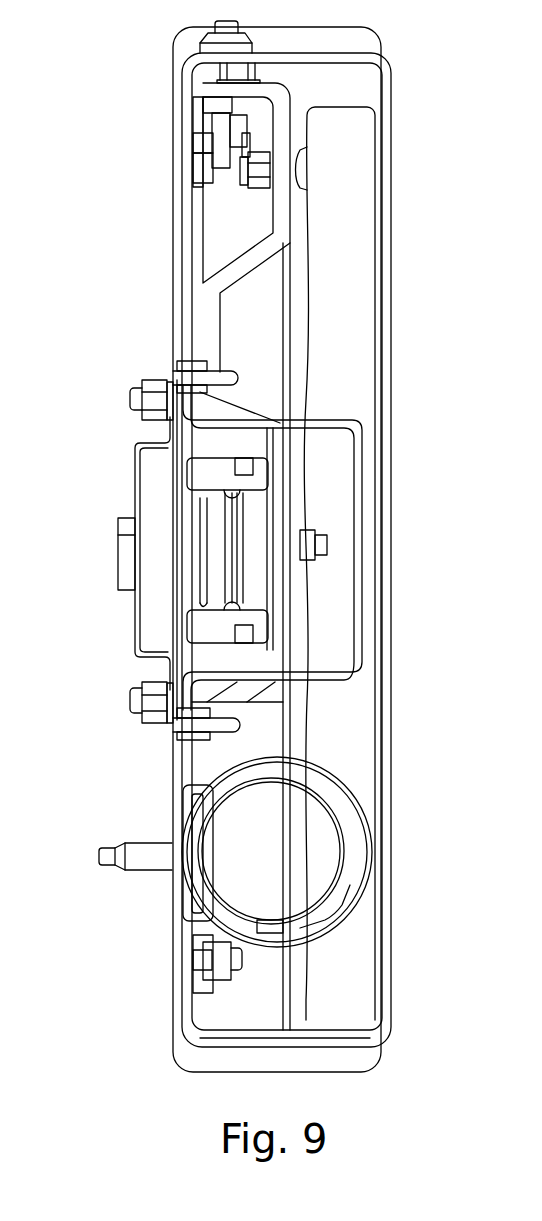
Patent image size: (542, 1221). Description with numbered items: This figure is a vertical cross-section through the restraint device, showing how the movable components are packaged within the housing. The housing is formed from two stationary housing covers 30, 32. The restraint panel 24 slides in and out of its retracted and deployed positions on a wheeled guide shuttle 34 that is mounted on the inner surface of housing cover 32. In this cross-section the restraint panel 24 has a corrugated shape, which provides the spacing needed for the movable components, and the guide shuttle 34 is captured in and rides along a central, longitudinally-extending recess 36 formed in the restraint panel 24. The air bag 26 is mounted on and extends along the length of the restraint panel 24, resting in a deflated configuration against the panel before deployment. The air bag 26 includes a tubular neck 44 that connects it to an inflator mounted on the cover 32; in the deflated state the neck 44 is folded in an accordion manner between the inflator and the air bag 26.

The restraint panel 24 is at (240, 270).
The air bag 26 is at (357, 165).
The housing cover 30 is at (177, 260).
The housing cover 32 is at (387, 282).
The guide shuttle 34 is at (212, 475).
The recess 36 is at (280, 490).
The tubular neck 44 is at (330, 830).